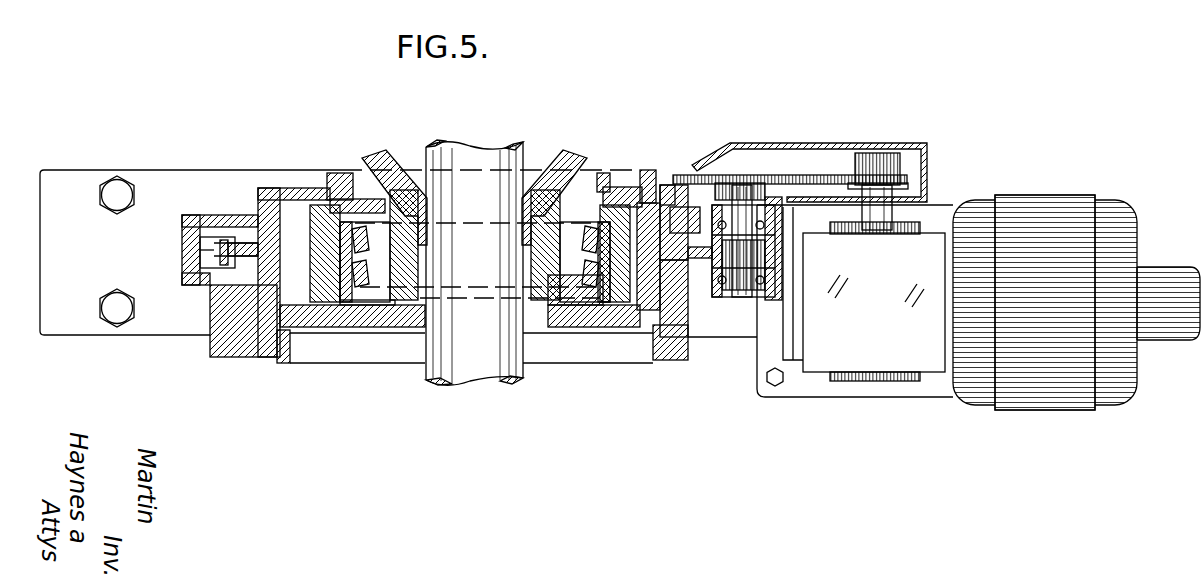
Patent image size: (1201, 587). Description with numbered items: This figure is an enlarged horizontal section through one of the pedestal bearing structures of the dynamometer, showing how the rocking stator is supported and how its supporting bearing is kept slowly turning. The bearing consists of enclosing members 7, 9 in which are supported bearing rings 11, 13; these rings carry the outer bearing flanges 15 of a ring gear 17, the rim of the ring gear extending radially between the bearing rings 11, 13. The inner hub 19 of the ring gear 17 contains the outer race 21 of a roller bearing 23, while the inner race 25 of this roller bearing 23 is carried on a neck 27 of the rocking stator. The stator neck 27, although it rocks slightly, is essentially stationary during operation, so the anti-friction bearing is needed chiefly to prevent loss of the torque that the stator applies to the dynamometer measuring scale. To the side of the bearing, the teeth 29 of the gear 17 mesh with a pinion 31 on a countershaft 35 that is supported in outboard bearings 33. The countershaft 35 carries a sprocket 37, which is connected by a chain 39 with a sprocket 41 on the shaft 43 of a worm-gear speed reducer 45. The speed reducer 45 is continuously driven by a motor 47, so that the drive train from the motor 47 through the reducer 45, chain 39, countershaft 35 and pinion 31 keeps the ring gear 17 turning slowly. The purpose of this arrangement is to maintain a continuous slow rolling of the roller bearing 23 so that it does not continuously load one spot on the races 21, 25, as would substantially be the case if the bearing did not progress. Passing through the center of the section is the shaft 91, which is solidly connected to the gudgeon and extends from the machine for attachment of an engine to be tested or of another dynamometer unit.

The shaft 91 is at (472, 162).
The outer bearing flanges 15 is at (300, 300).
The teeth 29 is at (225, 258).
The ring gear 17 is at (248, 243).
The inner hub 19 is at (335, 228).
The neck 27 is at (418, 232).
The inner race 25 is at (535, 250).
The outer race 21 is at (588, 292).
The roller bearing 23 is at (568, 320).
The bearing ring 13 is at (666, 203).
The enclosing member 9 is at (677, 207).
The enclosing member 7 is at (686, 316).
The bearing ring 11 is at (670, 335).
The countershaft 35 is at (743, 212).
The outboard bearings 33 is at (782, 228).
The pinion 31 is at (735, 290).
The sprocket 37 is at (726, 170).
The chain 39 is at (831, 175).
The sprocket 41 is at (884, 182).
The shaft 43 is at (884, 212).
The worm-gear speed reducer 45 is at (884, 312).
The motor 47 is at (1040, 200).